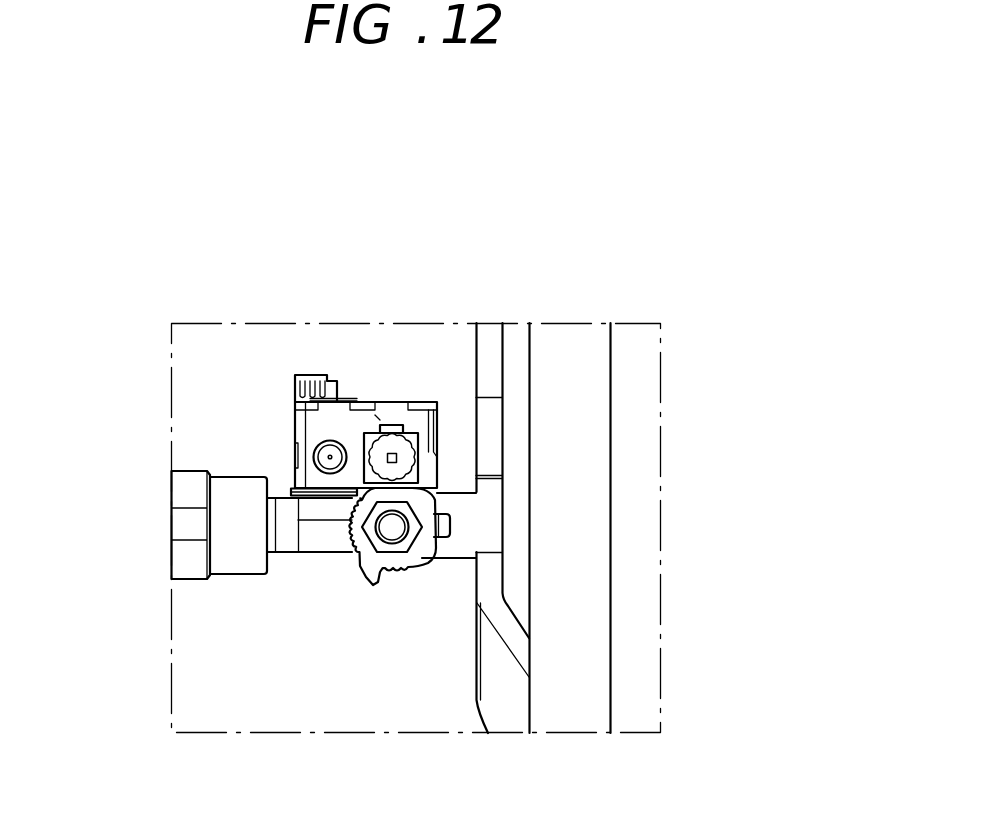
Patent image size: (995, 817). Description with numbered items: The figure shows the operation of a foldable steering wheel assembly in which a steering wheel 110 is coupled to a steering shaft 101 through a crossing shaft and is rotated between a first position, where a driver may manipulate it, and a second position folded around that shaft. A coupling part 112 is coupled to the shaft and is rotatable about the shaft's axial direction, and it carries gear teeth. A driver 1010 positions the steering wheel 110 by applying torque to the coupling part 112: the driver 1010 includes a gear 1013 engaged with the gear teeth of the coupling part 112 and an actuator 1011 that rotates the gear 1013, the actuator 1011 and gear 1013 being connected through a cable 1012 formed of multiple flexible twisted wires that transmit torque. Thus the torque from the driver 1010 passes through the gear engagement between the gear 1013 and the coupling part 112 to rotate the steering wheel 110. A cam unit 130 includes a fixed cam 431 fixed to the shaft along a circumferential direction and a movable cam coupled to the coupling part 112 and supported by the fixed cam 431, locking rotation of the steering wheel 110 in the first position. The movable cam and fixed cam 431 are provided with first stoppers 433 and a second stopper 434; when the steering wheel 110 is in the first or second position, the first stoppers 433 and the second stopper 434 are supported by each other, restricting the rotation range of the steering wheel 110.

The driver 1010 is at (290, 421).
The actuator 1011 is at (345, 420).
The cable 1012 is at (392, 452).
The gear 1013 is at (404, 446).
The first stoppers 433 is at (435, 503).
The second stopper 434 is at (450, 522).
The fixed cam 431 is at (352, 532).
The steering shaft 101 is at (285, 513).
The cam unit 130 is at (350, 568).
The coupling part 112 is at (460, 503).
The steering wheel 110 is at (577, 527).